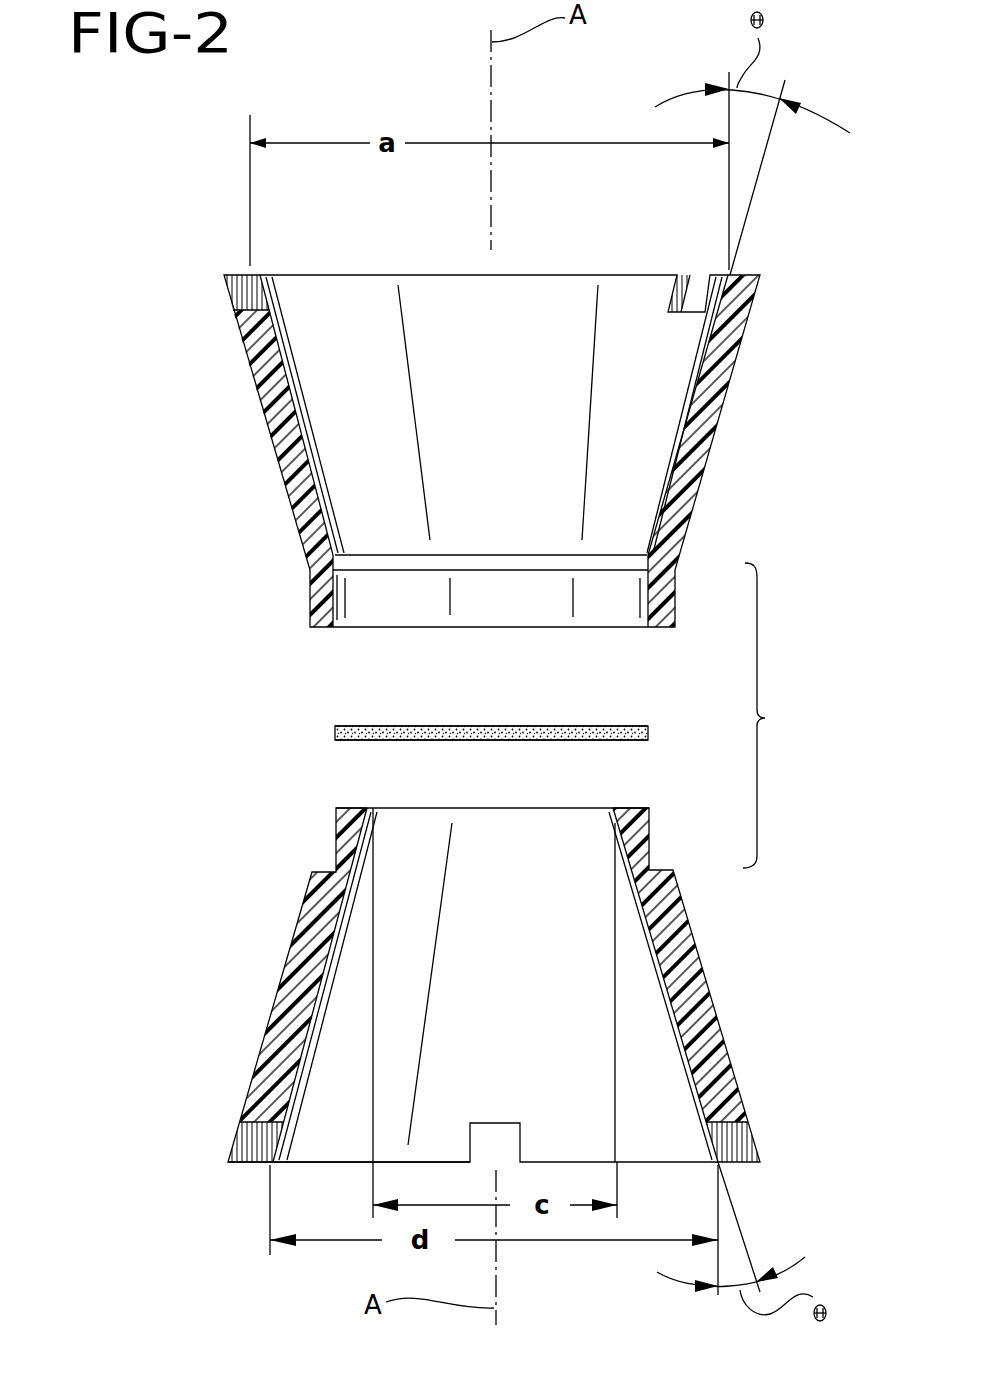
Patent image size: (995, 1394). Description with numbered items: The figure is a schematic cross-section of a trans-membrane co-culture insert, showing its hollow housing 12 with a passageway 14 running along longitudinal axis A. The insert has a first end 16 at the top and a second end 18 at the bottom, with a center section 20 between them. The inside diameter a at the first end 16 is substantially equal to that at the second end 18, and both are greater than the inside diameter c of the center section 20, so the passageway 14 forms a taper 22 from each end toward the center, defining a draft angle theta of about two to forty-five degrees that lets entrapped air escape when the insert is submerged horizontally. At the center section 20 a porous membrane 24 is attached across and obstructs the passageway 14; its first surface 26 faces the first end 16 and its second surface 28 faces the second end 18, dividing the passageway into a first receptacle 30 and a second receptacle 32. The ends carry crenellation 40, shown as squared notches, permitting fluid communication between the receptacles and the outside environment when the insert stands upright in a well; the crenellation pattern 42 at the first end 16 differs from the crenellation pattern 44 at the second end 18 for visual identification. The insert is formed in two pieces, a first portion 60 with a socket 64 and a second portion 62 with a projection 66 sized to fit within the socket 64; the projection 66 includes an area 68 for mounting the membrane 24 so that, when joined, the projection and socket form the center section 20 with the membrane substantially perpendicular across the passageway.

The hollow housing 12 is at (768, 270).
The passageway 14 is at (500, 325).
The first end 16 is at (250, 367).
The second end 18 is at (245, 1112).
The center section 20 is at (775, 715).
The taper 22 is at (662, 518).
The porous membrane 24 is at (648, 712).
The first surface 26 is at (520, 726).
The second surface 28 is at (357, 742).
The first receptacle 30 is at (340, 482).
The second receptacle 32 is at (336, 1012).
The crenellation 40 is at (240, 292).
The crenellation pattern 42 is at (690, 275).
The crenellation pattern 44 is at (255, 1142).
The first portion 60 is at (718, 418).
The second portion 62 is at (722, 952).
The socket 64 is at (345, 627).
The projection 66 is at (650, 833).
The area for mounting membrane 68 is at (360, 812).